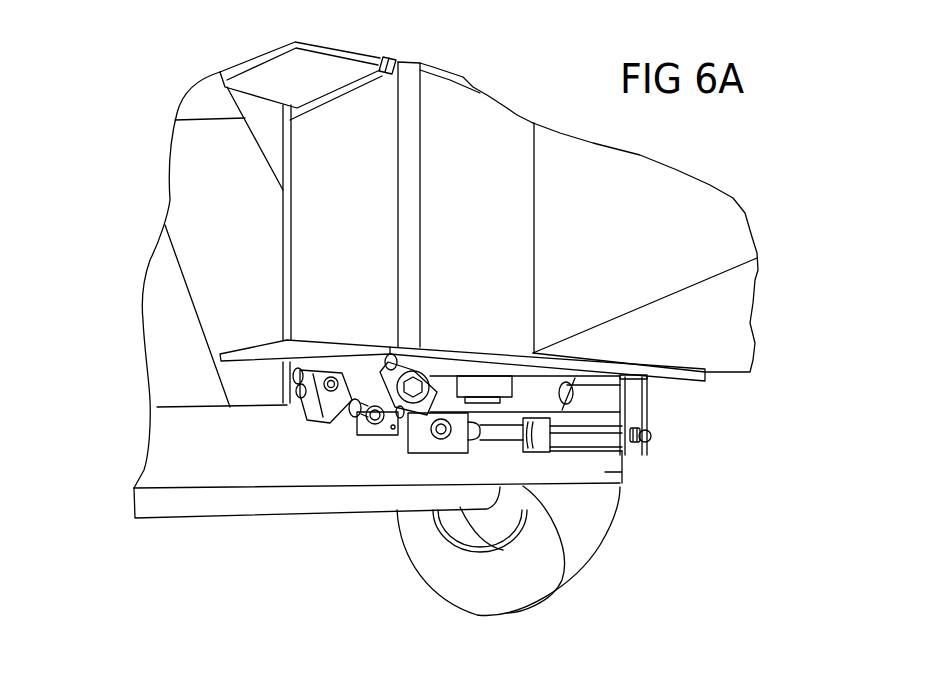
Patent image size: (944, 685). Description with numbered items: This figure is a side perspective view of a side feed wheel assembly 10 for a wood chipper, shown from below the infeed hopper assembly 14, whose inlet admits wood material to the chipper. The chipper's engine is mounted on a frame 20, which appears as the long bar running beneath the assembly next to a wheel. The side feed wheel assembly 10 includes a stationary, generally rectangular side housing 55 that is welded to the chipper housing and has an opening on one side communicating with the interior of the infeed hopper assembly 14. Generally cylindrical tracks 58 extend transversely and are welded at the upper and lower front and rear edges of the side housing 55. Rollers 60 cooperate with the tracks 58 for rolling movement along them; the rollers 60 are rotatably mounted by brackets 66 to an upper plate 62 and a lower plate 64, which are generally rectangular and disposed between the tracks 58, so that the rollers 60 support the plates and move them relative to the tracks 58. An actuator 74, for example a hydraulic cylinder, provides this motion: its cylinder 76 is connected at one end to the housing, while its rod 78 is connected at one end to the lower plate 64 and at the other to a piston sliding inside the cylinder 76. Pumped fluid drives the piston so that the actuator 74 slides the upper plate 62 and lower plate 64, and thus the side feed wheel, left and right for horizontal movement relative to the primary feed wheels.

The side feed wheel assembly 10 is at (516, 94).
The infeed hopper assembly 14 is at (723, 242).
The frame 20 is at (167, 475).
The side housing 55 is at (312, 231).
The tracks 58 is at (294, 377).
The rollers 60 is at (297, 398).
The upper plate 62 is at (318, 70).
The lower plate 64 is at (241, 351).
The brackets 66 is at (305, 418).
The actuator 74 is at (537, 421).
The cylinder 76 is at (557, 416).
The rod 78 is at (487, 435).